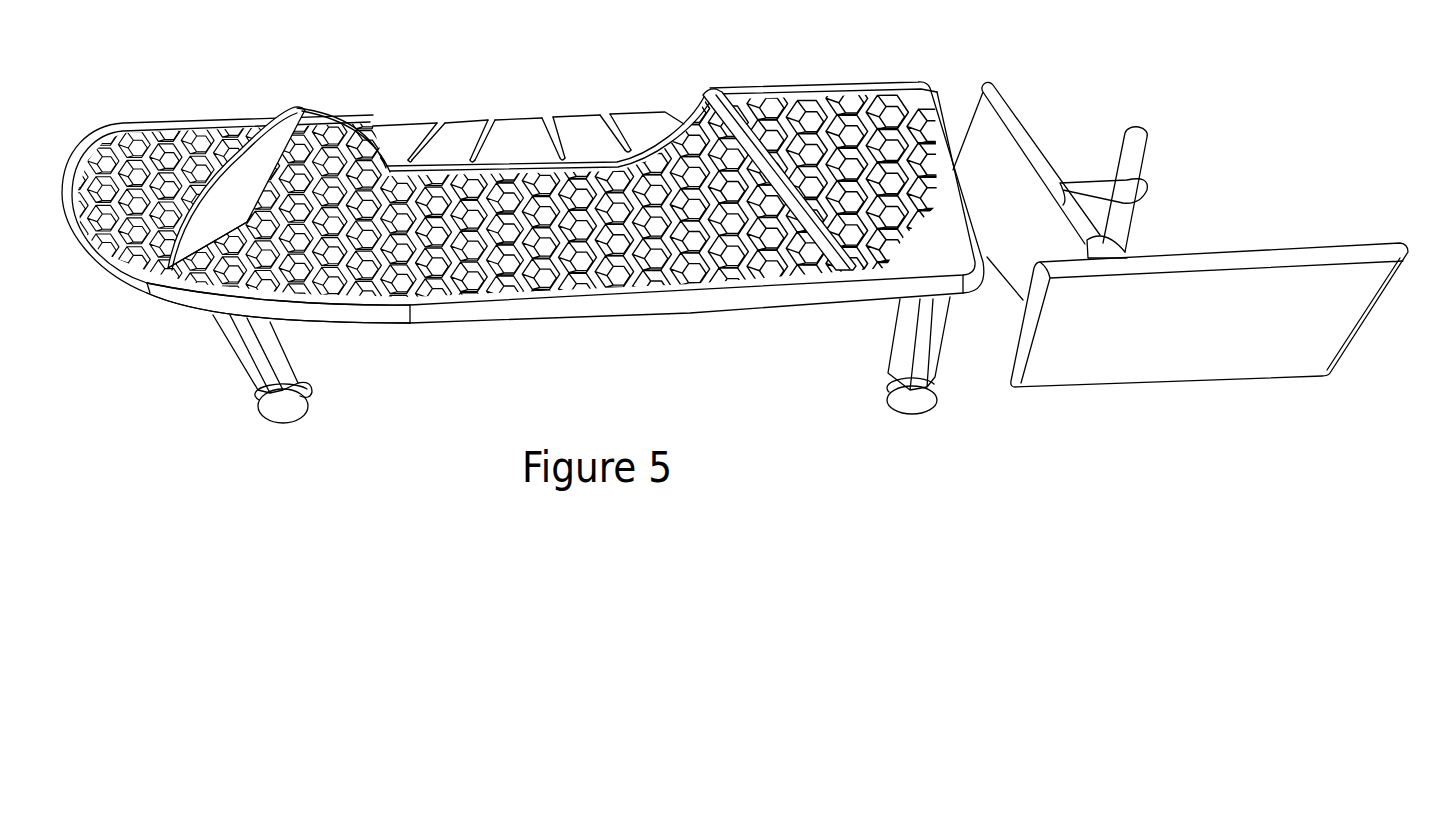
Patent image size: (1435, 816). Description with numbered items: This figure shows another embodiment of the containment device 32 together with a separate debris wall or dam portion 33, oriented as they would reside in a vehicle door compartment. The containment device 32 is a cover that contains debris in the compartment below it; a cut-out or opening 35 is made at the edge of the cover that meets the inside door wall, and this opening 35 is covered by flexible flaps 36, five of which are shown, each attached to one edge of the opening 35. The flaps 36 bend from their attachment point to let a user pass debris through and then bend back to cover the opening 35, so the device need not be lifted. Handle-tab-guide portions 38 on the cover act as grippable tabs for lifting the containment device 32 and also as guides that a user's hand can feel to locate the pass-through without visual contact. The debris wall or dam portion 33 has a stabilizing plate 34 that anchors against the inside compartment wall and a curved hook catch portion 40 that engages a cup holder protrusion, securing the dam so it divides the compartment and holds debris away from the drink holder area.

The containment device 32 is at (178, 308).
The debris wall or dam portion 33 is at (1209, 331).
The stabilizing plate 34 is at (1243, 257).
The opening 35 is at (581, 84).
The flexible flaps 36 is at (470, 130).
The handle-tab-guide portions 38 is at (242, 162).
The curved hook catch portion 40 is at (1091, 152).